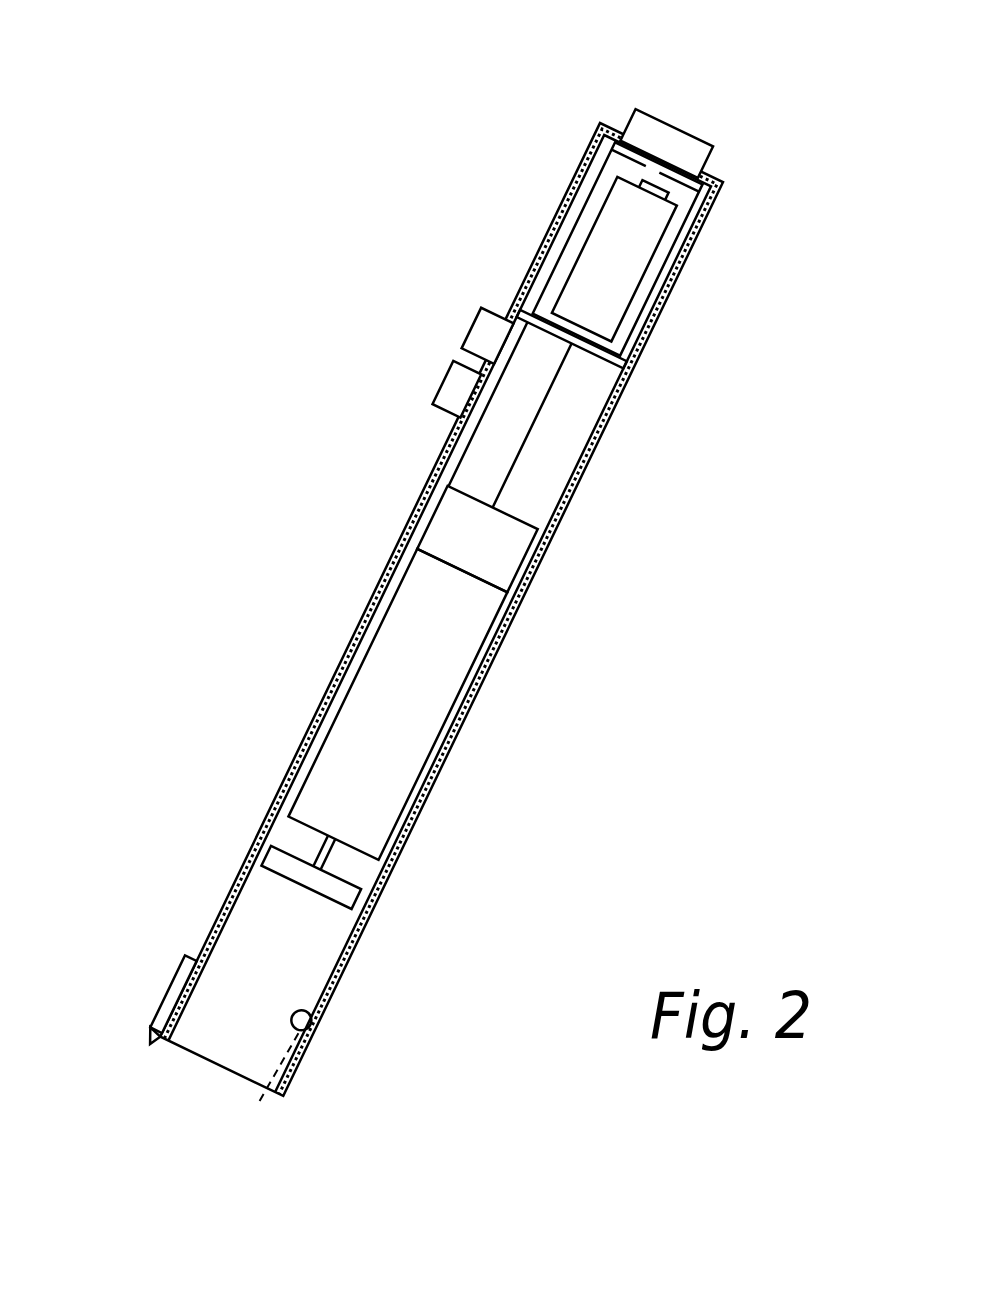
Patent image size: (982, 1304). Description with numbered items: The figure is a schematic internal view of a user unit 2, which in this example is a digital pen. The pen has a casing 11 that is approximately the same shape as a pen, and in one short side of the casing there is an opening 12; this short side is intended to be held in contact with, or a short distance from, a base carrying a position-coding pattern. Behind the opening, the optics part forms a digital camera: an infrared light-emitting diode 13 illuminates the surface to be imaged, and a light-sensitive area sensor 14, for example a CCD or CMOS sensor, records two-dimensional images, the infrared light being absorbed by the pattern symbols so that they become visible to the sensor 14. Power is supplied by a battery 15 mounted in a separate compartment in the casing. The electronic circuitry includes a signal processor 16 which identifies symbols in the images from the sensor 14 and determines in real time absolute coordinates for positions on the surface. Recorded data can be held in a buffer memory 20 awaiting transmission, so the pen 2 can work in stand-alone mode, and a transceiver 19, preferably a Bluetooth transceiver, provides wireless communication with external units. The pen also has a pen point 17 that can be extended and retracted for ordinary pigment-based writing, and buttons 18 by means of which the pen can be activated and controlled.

The user unit 2 is at (656, 451).
The casing 11 is at (543, 555).
The opening 12 is at (208, 1066).
The infrared light-emitting diode 13 is at (310, 1022).
The light-sensitive area sensor 14 is at (345, 880).
The battery 15 is at (613, 274).
The signal processor 16 is at (410, 712).
The pen point 17 is at (180, 983).
The buttons 18 is at (477, 335).
The transceiver 19 is at (674, 128).
The buffer memory 20 is at (458, 535).